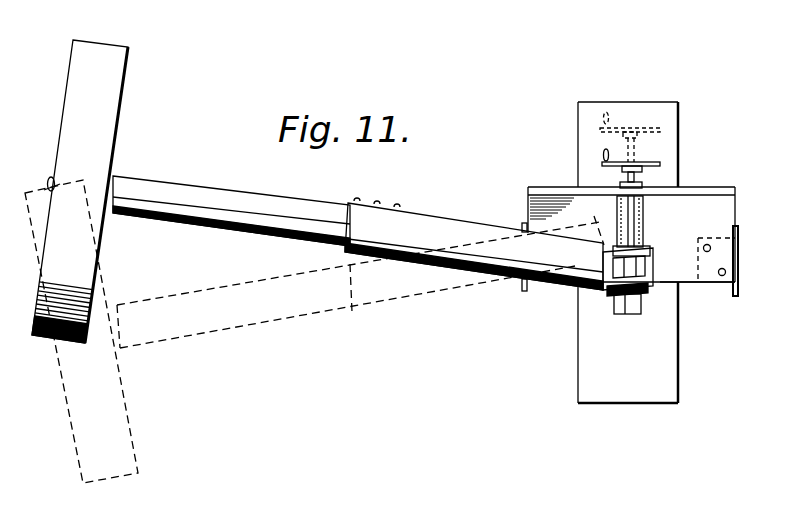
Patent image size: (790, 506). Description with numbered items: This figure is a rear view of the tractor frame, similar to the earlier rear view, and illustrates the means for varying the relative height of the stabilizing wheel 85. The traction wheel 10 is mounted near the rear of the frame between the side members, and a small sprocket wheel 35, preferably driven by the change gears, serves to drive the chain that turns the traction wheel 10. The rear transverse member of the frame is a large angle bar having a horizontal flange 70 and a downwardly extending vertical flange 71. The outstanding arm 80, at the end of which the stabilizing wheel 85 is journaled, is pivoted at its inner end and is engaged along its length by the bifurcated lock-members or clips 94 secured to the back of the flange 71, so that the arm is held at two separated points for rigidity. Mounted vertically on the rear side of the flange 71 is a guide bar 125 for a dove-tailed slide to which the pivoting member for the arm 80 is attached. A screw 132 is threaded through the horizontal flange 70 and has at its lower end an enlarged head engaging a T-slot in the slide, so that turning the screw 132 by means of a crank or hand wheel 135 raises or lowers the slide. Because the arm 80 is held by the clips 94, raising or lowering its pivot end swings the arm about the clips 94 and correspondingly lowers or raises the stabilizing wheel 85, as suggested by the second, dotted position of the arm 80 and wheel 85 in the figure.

The traction wheel 10 is at (653, 110).
The small sprocket wheel 35 is at (633, 162).
The horizontal flange 70 is at (706, 187).
The vertical flange 71 is at (697, 252).
The outstanding arm 80 is at (423, 225).
The stabilizing wheel 85 is at (97, 47).
The lock-members or clips 94 is at (739, 282).
The guide bar 125 is at (627, 315).
The screw 132 is at (644, 204).
The crank or hand wheel 135 is at (618, 124).